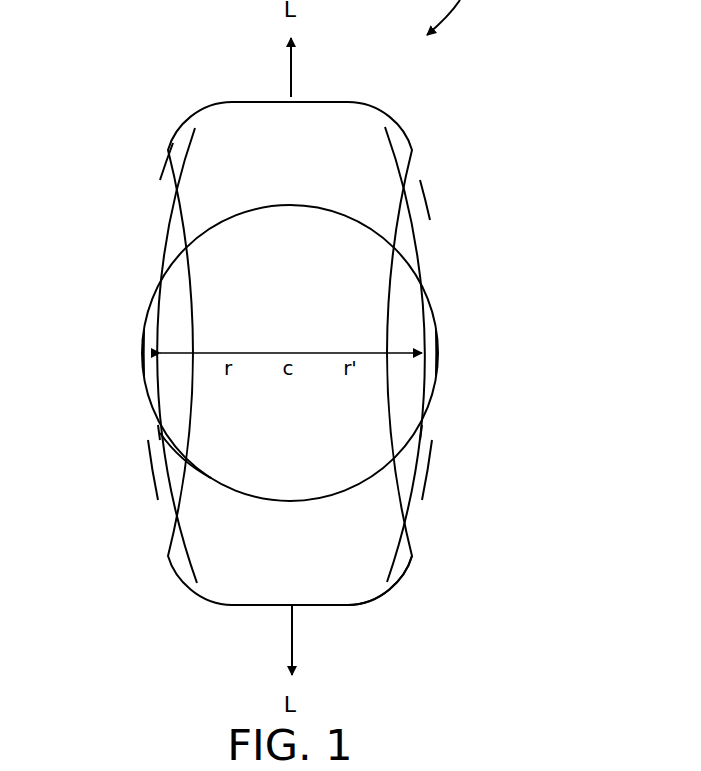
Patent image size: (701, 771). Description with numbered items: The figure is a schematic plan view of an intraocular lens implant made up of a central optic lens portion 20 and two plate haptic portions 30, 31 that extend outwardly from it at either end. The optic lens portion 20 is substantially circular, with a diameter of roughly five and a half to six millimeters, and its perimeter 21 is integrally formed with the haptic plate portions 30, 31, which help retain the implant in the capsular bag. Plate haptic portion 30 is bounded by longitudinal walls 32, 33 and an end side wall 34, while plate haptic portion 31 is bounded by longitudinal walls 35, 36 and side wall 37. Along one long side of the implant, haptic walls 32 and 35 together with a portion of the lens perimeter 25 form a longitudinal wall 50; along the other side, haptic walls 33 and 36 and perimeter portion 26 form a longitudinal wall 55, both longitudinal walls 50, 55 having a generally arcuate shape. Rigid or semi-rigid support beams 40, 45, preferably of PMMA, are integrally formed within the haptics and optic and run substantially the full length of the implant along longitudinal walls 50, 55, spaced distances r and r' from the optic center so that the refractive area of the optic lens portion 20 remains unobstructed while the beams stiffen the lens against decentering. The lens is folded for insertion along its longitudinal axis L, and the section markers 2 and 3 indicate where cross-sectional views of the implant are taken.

The section line 2- 2 is at (132, 373).
The section line 3- 3 is at (282, 97).
The optic lens portion 20 is at (397, 340).
The perimeter 21 is at (203, 477).
The portion of the lens perimeter 25 is at (143, 335).
The portion of the lens perimeter 26 is at (440, 343).
The haptic plate portion 30 is at (360, 135).
The haptic plate portion 31 is at (355, 593).
The longitudinal wall 32 is at (160, 192).
The longitudinal wall 33 is at (417, 163).
The side wall 34 is at (297, 100).
The longitudinal wall 35 is at (153, 478).
The longitudinal wall 36 is at (425, 500).
The side wall 37 is at (347, 607).
The support beam 40 is at (157, 440).
The support beam 45 is at (417, 468).
The longitudinal wall 50 is at (166, 140).
The longitudinal wall 55 is at (446, 215).